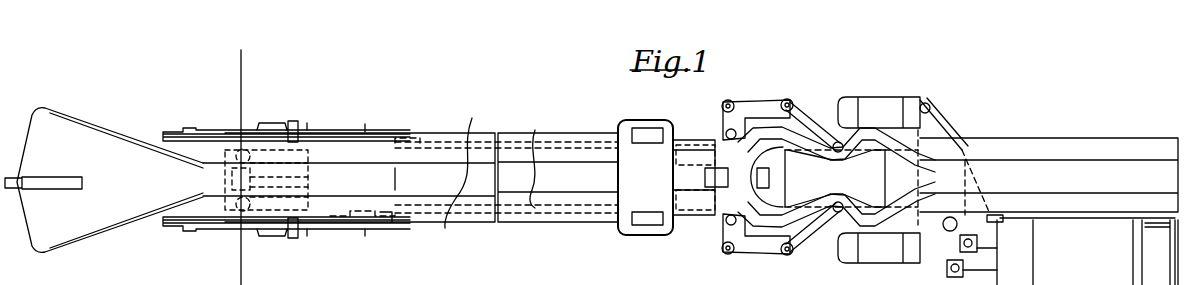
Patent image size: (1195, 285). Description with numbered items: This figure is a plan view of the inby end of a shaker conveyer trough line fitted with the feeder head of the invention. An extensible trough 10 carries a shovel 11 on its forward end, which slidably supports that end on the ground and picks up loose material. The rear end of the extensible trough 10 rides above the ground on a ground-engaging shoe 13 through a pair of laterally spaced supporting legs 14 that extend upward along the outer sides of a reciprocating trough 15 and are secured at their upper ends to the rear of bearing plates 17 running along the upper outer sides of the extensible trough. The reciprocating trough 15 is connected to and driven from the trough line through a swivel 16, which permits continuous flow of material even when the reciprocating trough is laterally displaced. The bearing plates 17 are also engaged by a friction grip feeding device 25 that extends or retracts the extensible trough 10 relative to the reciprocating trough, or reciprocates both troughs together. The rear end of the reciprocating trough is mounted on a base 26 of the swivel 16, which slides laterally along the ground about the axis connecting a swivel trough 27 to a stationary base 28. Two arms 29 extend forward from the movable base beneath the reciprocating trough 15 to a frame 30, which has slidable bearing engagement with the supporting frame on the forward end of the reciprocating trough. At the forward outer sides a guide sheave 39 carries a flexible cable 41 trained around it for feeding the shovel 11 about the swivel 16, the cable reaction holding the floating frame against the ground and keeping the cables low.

The extensible trough 10 is at (438, 132).
The shovel 11 is at (125, 118).
The ground-engaging shoe 13 is at (657, 120).
The supporting legs 14 is at (643, 132).
The reciprocating trough 15 is at (690, 214).
The swivel 16 is at (765, 240).
The bearing plates 17 is at (472, 166).
The friction grip feeding device 25 is at (218, 133).
The base 26 is at (750, 122).
The swivel trough 27 is at (804, 137).
The stationary base 28 is at (887, 98).
The arms 29 is at (541, 157).
The frame 30 is at (392, 222).
The guide sheave 39 is at (249, 148).
The flexible cable 41 is at (240, 56).